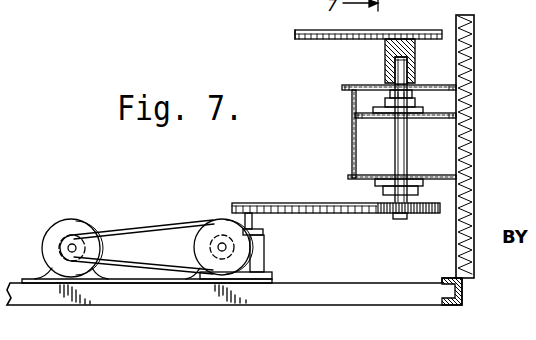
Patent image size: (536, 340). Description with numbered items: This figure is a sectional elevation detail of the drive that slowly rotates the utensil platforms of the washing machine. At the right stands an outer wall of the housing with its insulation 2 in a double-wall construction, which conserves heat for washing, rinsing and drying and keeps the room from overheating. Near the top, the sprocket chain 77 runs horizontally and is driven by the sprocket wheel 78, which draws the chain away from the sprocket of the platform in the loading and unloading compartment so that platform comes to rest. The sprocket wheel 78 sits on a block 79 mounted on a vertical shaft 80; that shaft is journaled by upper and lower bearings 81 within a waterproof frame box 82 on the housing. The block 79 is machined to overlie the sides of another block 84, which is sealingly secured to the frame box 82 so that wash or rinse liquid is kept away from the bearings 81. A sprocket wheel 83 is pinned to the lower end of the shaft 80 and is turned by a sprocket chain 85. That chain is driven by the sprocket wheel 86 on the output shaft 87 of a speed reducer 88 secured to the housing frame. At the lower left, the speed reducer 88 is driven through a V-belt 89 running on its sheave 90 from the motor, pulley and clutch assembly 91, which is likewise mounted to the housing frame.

The insulation 2 is at (474, 52).
The sprocket chain 77 is at (302, 40).
The sprocket wheel 78 is at (383, 31).
The block 79 is at (384, 52).
The shaft 80 is at (408, 140).
The bearings 81 is at (423, 104).
The waterproof frame box 82 is at (351, 138).
The sprocket wheel 83 is at (423, 213).
The block 84 is at (394, 70).
The sprocket chain 85 is at (329, 213).
The sprocket wheel 86 is at (256, 203).
The output shaft 87 is at (257, 221).
The speed reducer 88 is at (264, 255).
The V-belt 89 is at (132, 227).
The sheave 90 is at (214, 219).
The motor, pulley and clutch assembly 91 is at (63, 216).